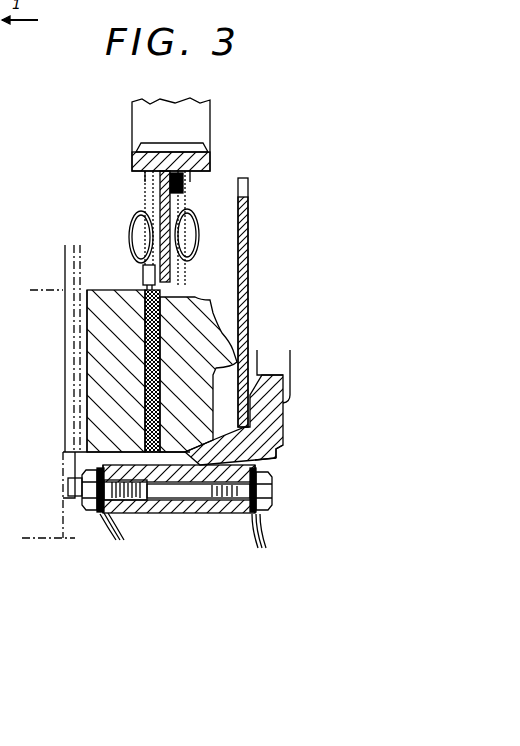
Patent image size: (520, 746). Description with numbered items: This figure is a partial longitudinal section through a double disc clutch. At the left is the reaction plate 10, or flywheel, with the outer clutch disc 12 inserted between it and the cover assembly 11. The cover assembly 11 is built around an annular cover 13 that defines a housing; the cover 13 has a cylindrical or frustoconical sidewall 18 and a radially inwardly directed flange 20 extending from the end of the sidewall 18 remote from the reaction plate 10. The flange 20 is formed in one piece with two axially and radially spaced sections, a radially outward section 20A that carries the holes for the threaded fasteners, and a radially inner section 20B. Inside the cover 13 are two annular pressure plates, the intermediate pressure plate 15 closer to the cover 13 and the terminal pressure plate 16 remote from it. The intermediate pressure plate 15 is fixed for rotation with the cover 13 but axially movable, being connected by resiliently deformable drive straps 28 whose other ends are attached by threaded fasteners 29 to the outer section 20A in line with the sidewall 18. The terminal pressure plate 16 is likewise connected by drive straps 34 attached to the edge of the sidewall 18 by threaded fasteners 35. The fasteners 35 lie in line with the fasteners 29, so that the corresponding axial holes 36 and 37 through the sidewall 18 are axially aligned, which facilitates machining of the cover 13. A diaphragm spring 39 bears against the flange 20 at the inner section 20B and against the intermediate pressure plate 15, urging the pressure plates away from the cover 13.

The reaction plate 10 is at (42, 538).
The cover assembly 11 is at (283, 233).
The outer clutch disc 12 is at (70, 292).
The annular cover 13 is at (264, 427).
The intermediate pressure plate 15 is at (209, 298).
The terminal pressure plate 16 is at (111, 292).
The sidewall 18 is at (190, 514).
The flange 20 is at (268, 448).
The radially outward section of the flange 20A is at (245, 466).
The radially inner section of the flange 20B is at (270, 392).
The drive straps 28 is at (269, 537).
The threaded fasteners 29 is at (268, 502).
The drive straps 34 is at (118, 536).
The threaded fasteners 35 is at (90, 512).
The axial hole 36 is at (229, 512).
The axial hole 37 is at (138, 504).
The diaphragm spring 39 is at (249, 201).